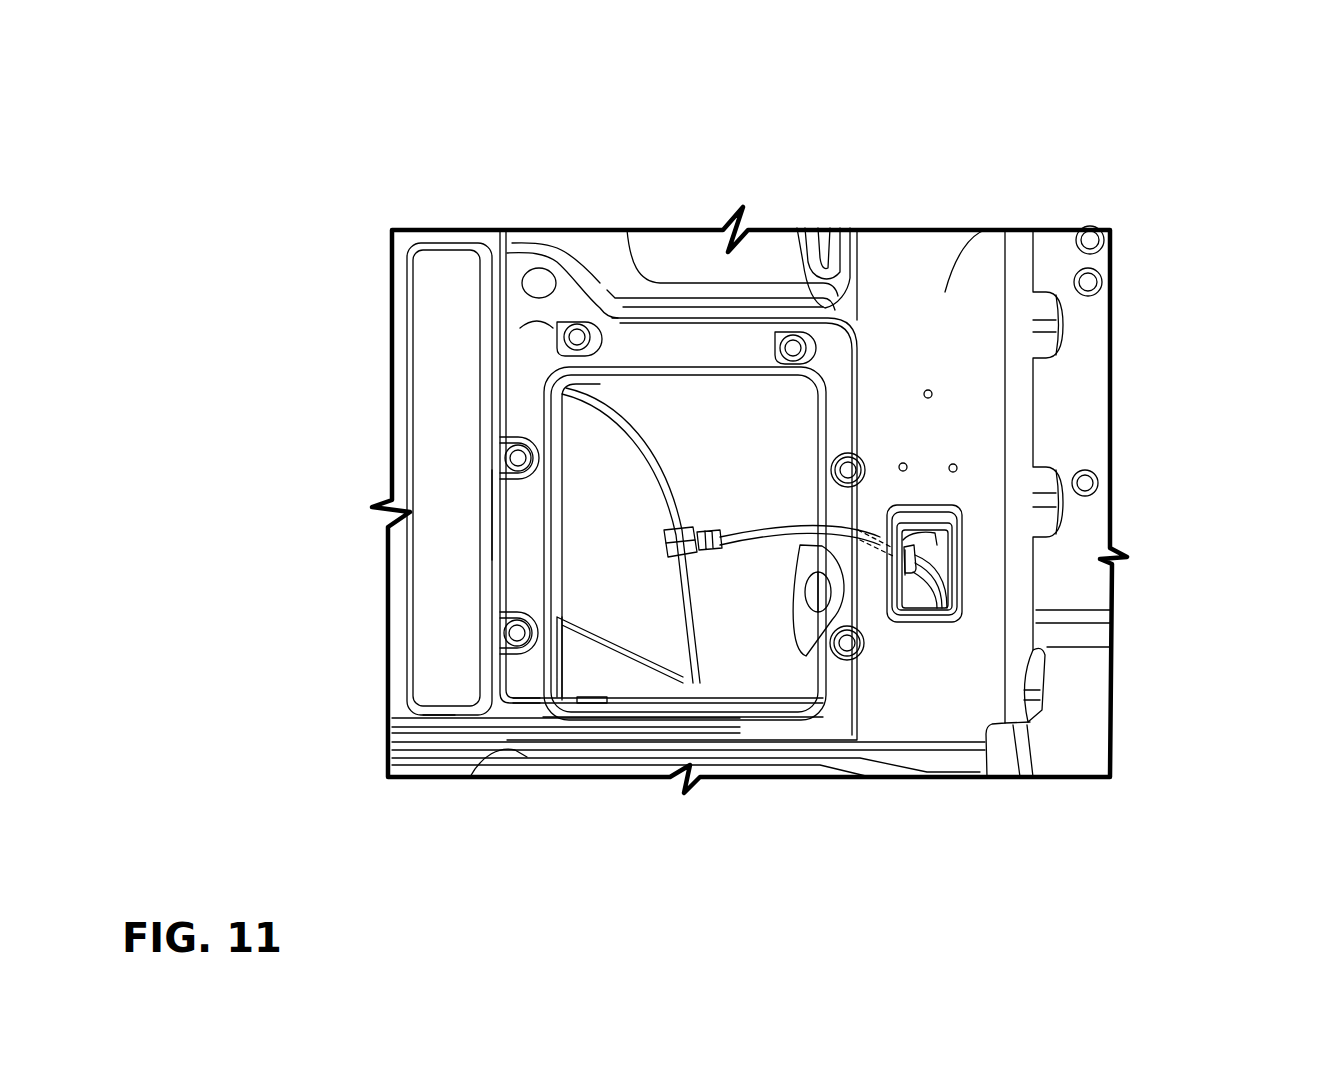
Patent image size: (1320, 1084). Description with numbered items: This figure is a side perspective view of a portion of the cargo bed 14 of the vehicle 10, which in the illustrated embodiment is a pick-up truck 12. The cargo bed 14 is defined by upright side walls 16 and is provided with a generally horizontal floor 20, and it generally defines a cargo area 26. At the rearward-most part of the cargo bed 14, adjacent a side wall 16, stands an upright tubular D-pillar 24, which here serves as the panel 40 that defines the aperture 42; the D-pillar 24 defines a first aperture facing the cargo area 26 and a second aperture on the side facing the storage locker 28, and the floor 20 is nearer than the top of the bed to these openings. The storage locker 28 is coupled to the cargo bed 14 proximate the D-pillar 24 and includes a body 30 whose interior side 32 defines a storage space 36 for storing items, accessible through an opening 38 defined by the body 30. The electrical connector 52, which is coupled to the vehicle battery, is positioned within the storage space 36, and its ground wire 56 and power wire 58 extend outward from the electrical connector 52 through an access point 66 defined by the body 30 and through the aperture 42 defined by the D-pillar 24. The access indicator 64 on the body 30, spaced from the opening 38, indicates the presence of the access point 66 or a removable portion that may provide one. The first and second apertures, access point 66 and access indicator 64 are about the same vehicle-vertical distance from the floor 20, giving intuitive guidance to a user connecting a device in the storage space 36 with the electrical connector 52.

The vehicle 10 is at (1000, 140).
The pick-up truck 12 is at (1047, 147).
The cargo bed 14 is at (425, 745).
The side walls 16 is at (435, 370).
The floor 20 is at (490, 760).
The D-pillar 24 is at (945, 292).
The cargo area 26 is at (447, 660).
The storage locker 28 is at (667, 377).
The body 30 is at (603, 437).
The interior side 32 is at (592, 478).
The storage space 36 is at (700, 458).
The opening 38 is at (807, 393).
The panel 40 is at (958, 427).
The aperture 42 is at (940, 507).
The electrical connector 52 is at (682, 550).
The ground wire 56 is at (737, 530).
The power wire 58 is at (957, 600).
The access indicator 64 is at (930, 553).
The access point 66 is at (914, 565).